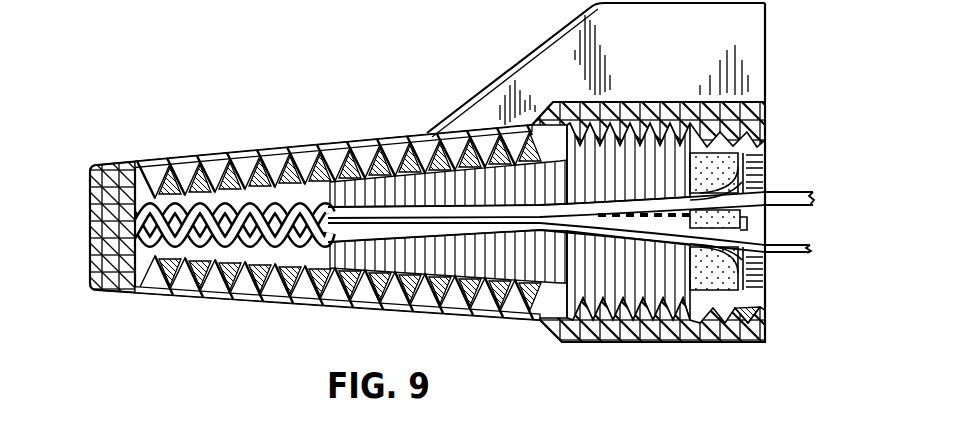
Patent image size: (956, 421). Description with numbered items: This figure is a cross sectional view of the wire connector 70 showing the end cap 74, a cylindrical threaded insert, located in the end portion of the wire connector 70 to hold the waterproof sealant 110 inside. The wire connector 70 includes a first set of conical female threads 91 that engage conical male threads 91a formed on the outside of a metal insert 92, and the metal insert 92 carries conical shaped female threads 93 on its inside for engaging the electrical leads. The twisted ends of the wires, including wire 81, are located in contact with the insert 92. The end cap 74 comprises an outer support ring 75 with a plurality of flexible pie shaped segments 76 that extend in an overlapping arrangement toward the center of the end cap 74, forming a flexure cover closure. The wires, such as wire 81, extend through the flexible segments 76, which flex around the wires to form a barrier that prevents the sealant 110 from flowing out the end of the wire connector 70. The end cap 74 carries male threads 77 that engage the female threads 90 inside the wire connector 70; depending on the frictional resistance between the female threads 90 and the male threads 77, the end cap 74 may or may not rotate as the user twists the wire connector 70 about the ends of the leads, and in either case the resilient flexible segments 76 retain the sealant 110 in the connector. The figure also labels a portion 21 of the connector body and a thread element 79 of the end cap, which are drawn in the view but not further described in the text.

The wire connector 70 is at (168, 128).
The nut body 21 is at (666, 60).
The end cap 74 is at (766, 304).
The outer support ring 75 is at (766, 135).
The flexible pie shaped segments 76 is at (767, 186).
The male threads 77 is at (707, 325).
The thread tooth 79 is at (742, 314).
The wire 81 is at (800, 255).
The female threads 90 is at (562, 108).
The conical female threads 91 is at (480, 137).
The conical male threads 91a is at (414, 150).
The metal insert 92 is at (373, 137).
The conical shaped female threads 93 is at (340, 172).
The sealant 110 is at (628, 274).